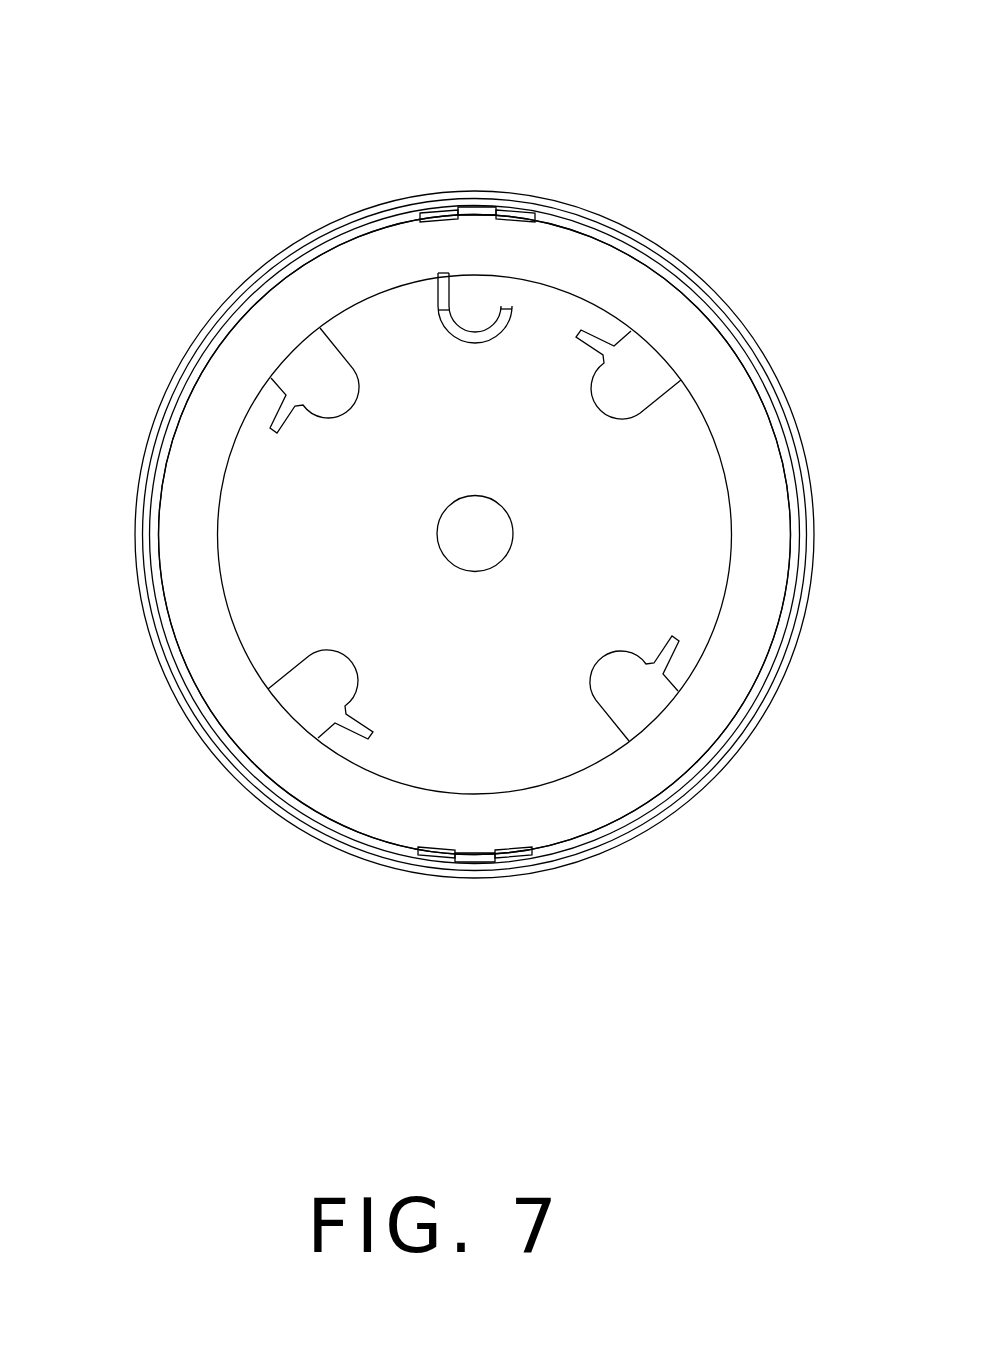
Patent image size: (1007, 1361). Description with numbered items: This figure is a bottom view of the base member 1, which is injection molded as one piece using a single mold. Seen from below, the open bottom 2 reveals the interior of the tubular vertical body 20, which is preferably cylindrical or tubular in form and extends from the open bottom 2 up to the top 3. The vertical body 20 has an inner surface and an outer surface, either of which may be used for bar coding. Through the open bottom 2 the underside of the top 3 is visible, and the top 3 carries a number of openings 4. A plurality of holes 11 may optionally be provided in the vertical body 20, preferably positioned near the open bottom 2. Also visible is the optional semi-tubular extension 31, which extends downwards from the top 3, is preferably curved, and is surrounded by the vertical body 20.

The base member 1 is at (183, 785).
The open bottom 2 is at (600, 853).
The top 3 is at (640, 541).
The openings 4 is at (628, 372).
The holes 11 is at (513, 218).
The tubular vertical body 20 is at (338, 280).
The semi-tubular extension 31 is at (506, 309).